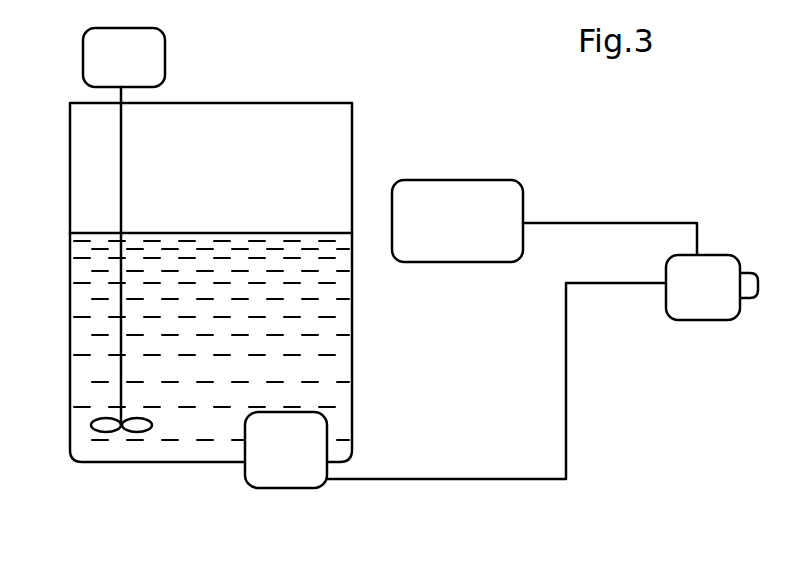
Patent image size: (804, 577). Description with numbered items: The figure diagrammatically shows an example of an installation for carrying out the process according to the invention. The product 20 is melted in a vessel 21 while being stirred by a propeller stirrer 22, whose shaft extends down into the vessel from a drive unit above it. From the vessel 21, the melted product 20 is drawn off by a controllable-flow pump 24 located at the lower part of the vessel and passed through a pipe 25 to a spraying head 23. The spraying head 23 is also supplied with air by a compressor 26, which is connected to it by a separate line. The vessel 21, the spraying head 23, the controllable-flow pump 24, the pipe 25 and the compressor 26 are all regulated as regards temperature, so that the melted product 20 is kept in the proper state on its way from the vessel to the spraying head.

The product 20 is at (352, 343).
The vessel 21 is at (70, 345).
The propeller stirrer 22 is at (165, 45).
The spraying head 23 is at (715, 320).
The controllable-flow pump 24 is at (267, 488).
The pipe 25 is at (566, 437).
The compressor 26 is at (443, 180).